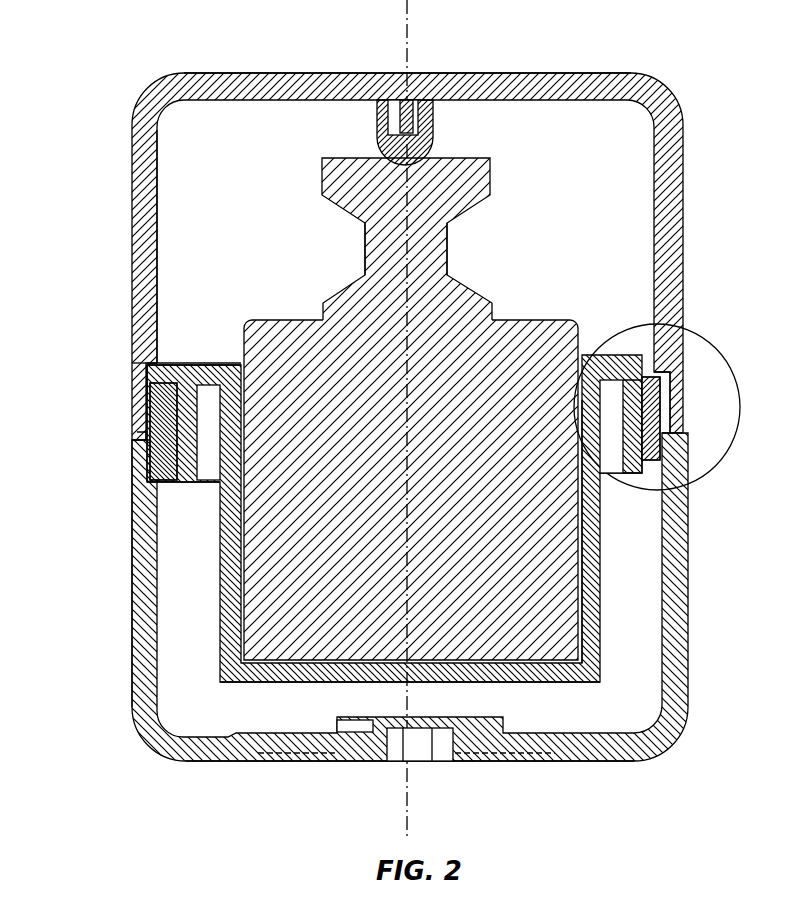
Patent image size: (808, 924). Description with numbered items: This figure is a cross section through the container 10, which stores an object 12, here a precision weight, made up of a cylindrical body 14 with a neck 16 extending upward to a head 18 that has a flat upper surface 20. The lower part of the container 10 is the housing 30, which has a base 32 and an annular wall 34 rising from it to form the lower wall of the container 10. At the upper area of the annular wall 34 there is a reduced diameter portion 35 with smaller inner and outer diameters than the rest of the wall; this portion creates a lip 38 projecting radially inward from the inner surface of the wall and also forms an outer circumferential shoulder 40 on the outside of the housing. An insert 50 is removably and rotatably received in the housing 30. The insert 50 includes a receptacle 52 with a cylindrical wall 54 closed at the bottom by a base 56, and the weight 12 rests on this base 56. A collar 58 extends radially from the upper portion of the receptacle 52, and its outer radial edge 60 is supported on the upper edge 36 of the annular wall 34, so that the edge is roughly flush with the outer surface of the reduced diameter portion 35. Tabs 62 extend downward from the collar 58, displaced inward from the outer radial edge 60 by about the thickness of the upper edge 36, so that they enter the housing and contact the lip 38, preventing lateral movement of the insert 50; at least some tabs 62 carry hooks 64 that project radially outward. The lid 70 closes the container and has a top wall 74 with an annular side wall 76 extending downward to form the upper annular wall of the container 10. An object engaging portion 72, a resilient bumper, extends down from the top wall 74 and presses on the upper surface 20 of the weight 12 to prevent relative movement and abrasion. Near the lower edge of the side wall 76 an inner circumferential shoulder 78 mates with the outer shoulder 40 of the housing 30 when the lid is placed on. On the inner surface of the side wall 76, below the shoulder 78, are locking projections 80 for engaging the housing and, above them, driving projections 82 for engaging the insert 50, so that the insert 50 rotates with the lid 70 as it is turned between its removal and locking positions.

The container 10 is at (400, 419).
The object 12 is at (547, 323).
The cylindrical body 14 is at (585, 333).
The neck 16 is at (448, 250).
The head 18 is at (490, 173).
The upper surface 20 is at (443, 157).
The housing 30 is at (688, 593).
The base 32 is at (220, 762).
The annular wall 34 is at (133, 670).
The reduced diameter portion 35 is at (152, 408).
The upper edge 36 is at (163, 380).
The lip 38 is at (175, 481).
The outer circumferential shoulder 40 is at (137, 438).
The insert 50 is at (221, 680).
The receptacle 52 is at (600, 628).
The cylindrical wall 54 is at (600, 558).
The base 56 is at (330, 683).
The collar 58 is at (200, 362).
The outer radial edge 60 is at (147, 377).
The tabs 62 is at (195, 483).
The hooks 64 is at (648, 467).
The lid 70 is at (132, 180).
The object engaging portion 72 is at (375, 128).
The top wall 74 is at (228, 73).
The annular side wall 76 is at (132, 255).
The inner circumferential shoulder 78 is at (146, 363).
The locking projections 80 is at (662, 400).
The driving projections 82 is at (660, 372).